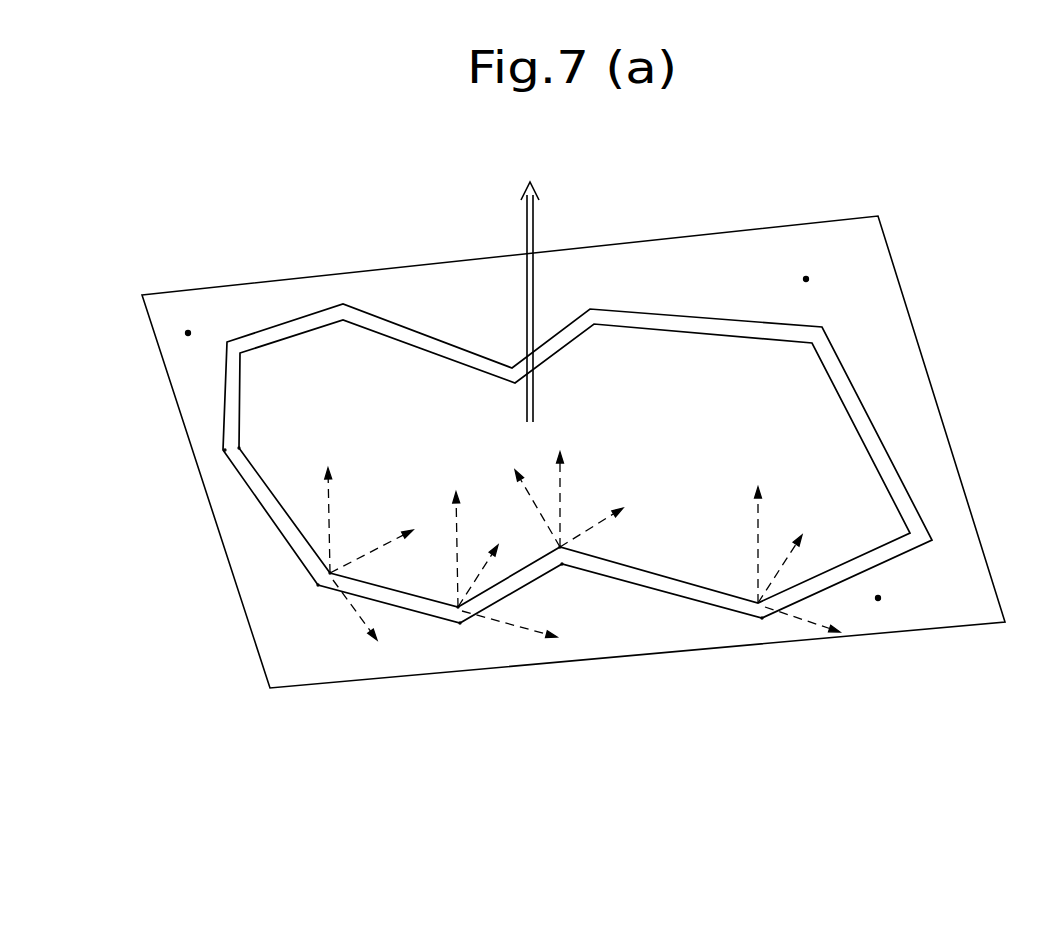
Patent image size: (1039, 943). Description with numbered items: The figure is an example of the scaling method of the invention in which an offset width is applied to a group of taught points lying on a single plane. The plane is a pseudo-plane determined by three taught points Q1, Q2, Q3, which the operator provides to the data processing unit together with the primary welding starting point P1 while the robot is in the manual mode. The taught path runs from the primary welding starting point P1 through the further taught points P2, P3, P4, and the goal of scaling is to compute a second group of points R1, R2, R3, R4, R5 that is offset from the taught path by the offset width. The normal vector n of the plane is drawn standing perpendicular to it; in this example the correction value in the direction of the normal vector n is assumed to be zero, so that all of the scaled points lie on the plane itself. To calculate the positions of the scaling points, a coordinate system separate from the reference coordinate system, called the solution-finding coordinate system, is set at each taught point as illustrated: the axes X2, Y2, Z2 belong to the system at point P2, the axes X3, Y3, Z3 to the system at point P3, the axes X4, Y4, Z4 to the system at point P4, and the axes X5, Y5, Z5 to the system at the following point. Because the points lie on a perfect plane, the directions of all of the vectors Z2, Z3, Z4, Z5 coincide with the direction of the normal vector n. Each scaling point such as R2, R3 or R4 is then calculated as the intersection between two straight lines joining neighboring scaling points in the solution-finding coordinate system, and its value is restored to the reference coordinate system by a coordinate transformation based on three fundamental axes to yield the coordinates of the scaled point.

The normal vector n is at (541, 155).
The taught point Q1 is at (204, 335).
The taught point Q2 is at (894, 600).
The taught point Q3 is at (822, 281).
The primary welding starting point P1 is at (253, 443).
The taught point P2 is at (315, 548).
The taught point P3 is at (443, 593).
The taught point P4 is at (542, 546).
The scaling point R1 is at (212, 454).
The scaling point R2 is at (315, 600).
The scaling point R3 is at (456, 637).
The scaling point R4 is at (563, 582).
The scaling point R5 is at (752, 631).
The X axis of solution-finding coordinate system X2 is at (369, 625).
The Y axis of solution-finding coordinate system Y2 is at (384, 545).
The Z vector of solution-finding coordinate system Z2 is at (327, 508).
The X axis of solution-finding coordinate system X3 is at (523, 632).
The Y axis of solution-finding coordinate system Y3 is at (484, 563).
The Z vector of solution-finding coordinate system Z3 is at (457, 535).
The X axis of solution-finding coordinate system X4 is at (609, 520).
The Y axis of solution-finding coordinate system Y4 is at (528, 496).
The Z vector of solution-finding coordinate system Z4 is at (563, 485).
The X axis of solution-finding coordinate system X5 is at (815, 621).
The Y axis of solution-finding coordinate system Y5 is at (789, 554).
The Z vector of solution-finding coordinate system Z5 is at (762, 533).